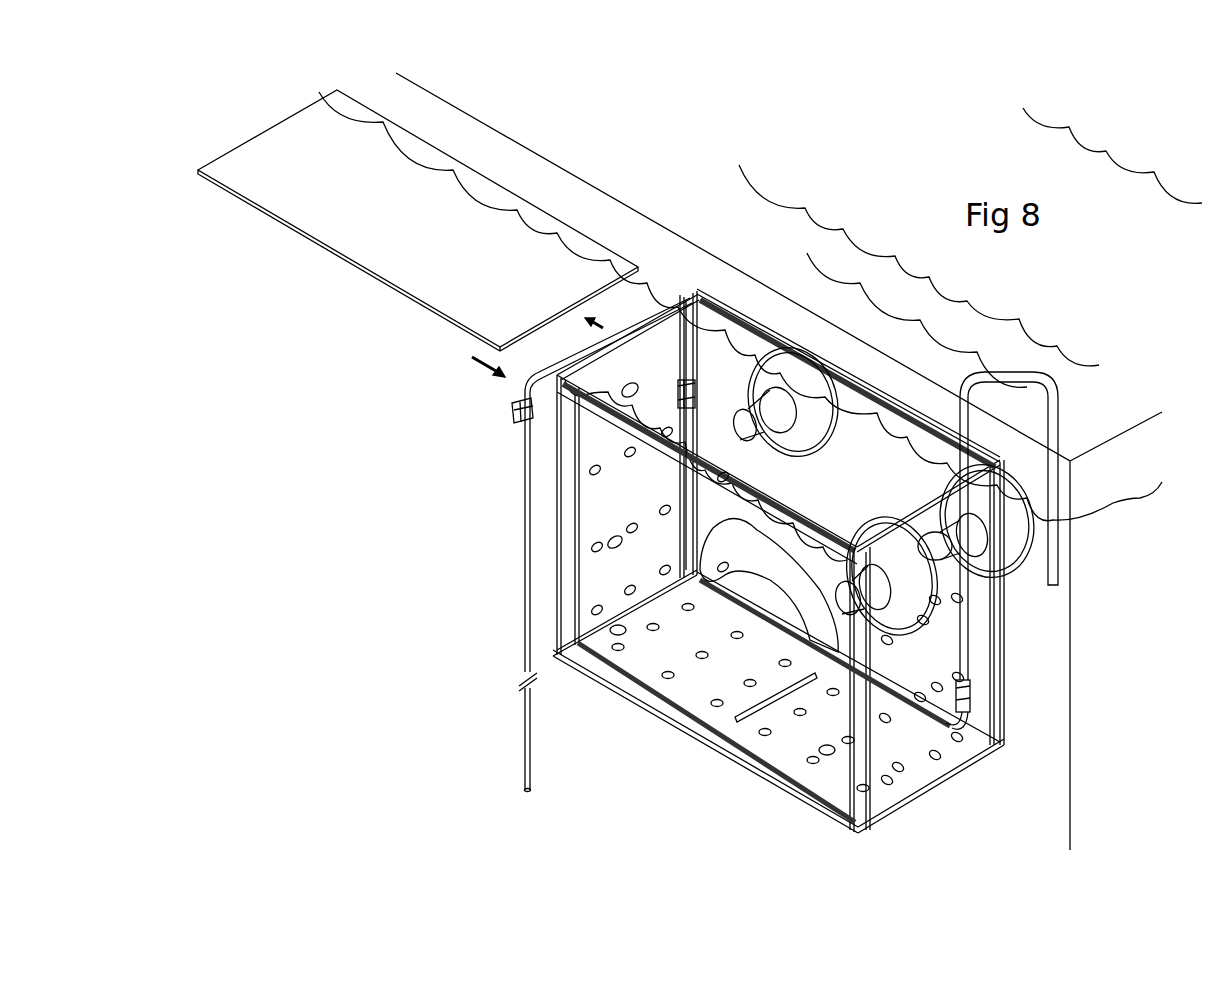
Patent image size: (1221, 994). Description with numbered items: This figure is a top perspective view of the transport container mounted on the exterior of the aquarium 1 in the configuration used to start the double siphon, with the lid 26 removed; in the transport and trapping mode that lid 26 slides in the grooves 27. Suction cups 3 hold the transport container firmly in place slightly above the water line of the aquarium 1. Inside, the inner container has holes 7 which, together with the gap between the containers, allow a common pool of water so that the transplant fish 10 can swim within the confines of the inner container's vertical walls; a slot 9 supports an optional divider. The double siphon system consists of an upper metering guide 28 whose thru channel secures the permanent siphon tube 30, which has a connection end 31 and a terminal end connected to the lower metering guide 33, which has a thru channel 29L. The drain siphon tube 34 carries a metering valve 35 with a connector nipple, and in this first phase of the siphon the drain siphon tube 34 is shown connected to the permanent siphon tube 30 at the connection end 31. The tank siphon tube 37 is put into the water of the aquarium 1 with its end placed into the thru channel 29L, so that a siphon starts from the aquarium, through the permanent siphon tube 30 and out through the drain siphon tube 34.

The aquarium 1 is at (1120, 432).
The suction cups 3 is at (832, 397).
The holes 7 is at (593, 550).
The slot 9 is at (733, 718).
The transplant fish 10 is at (797, 600).
The lid 26 is at (403, 198).
The grooves 27 is at (715, 301).
The upper metering guide 28 is at (682, 380).
The thru channel 29L is at (967, 682).
The permanent siphon tube 30 is at (678, 483).
The connection end 31 is at (475, 360).
The lower metering guide 33 is at (968, 703).
The drain siphon tube 34 is at (525, 480).
The metering valve 35 is at (510, 413).
The tank siphon tube 37 is at (1043, 375).